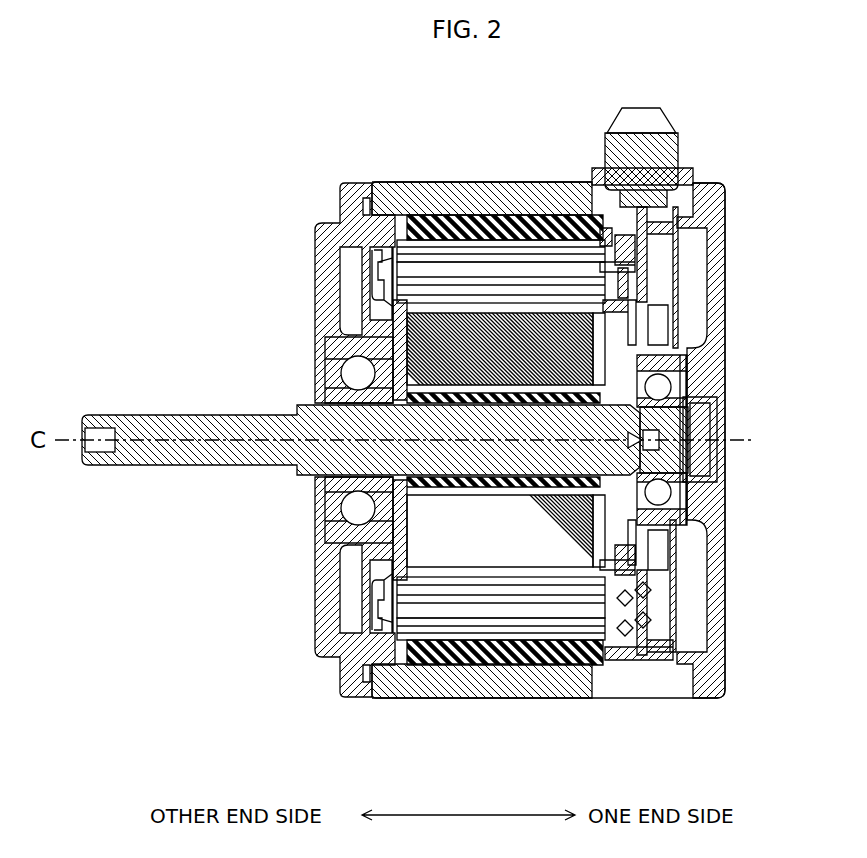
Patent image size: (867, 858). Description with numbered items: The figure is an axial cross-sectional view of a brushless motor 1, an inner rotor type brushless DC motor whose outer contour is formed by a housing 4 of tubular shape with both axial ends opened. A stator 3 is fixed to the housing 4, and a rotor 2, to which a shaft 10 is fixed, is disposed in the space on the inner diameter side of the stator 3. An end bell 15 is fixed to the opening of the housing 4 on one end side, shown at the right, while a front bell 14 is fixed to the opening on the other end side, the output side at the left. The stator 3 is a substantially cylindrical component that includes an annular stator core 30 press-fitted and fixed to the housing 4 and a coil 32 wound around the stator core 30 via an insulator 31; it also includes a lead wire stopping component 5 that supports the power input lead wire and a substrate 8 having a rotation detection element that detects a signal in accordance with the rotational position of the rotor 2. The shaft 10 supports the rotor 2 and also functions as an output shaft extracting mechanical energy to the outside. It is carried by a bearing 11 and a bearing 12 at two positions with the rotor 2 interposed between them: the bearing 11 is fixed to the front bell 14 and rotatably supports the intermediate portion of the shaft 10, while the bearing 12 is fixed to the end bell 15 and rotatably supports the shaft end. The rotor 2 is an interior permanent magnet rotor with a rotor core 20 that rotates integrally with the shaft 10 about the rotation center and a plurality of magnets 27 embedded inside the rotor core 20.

The brushless motor 1 is at (207, 133).
The rotor 2 is at (380, 312).
The stator 3 is at (412, 213).
The housing 4 is at (440, 700).
The lead wire stopping component 5 is at (690, 250).
The substrate 8 is at (690, 330).
The shaft 10 is at (142, 472).
The bearing 11 is at (318, 522).
The bearing 12 is at (695, 496).
The front bell 14 is at (318, 572).
The end bell 15 is at (720, 648).
The rotor core 20 is at (718, 385).
The magnets 27 is at (688, 560).
The stator core 30 is at (490, 664).
The insulator 31 is at (604, 655).
The coil 32 is at (545, 628).